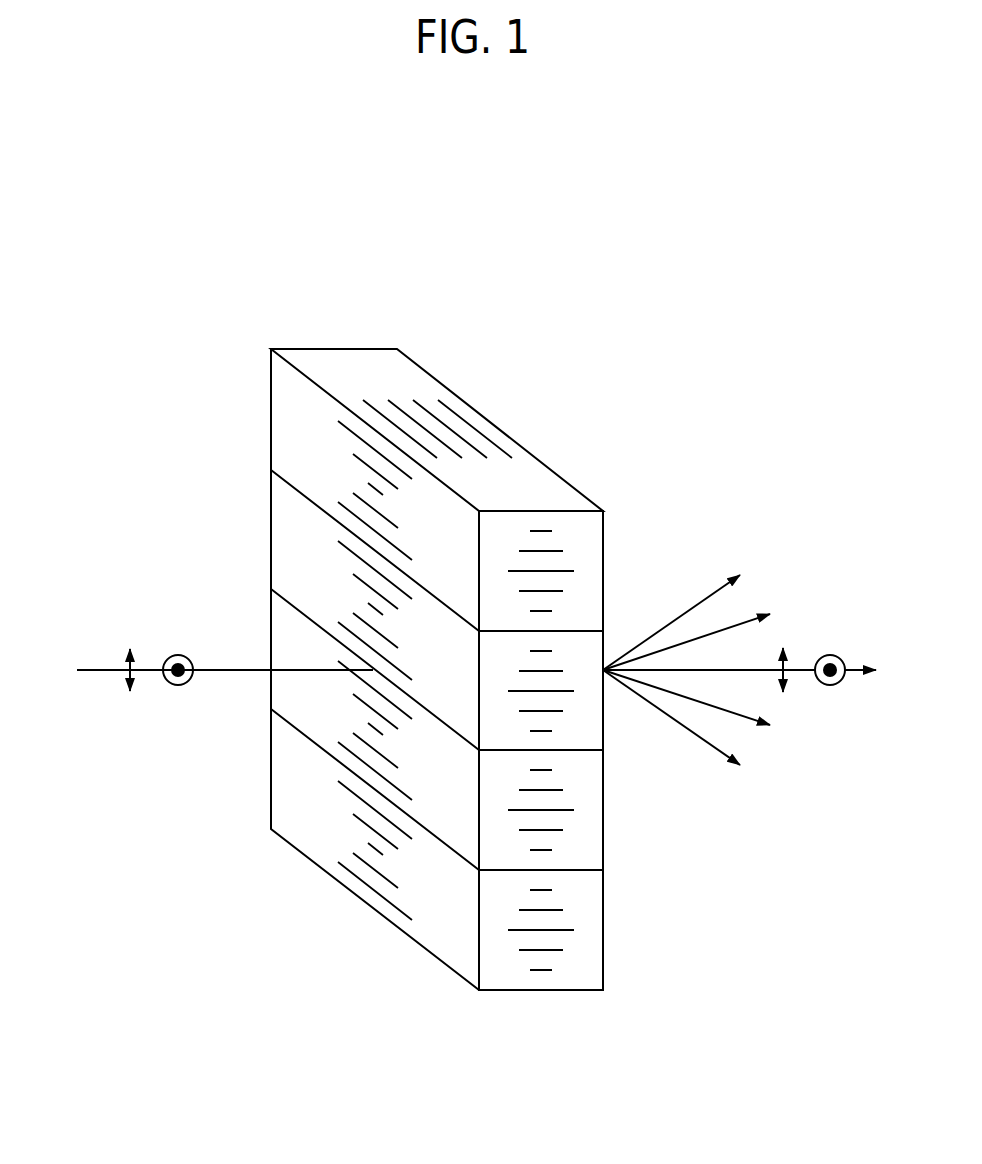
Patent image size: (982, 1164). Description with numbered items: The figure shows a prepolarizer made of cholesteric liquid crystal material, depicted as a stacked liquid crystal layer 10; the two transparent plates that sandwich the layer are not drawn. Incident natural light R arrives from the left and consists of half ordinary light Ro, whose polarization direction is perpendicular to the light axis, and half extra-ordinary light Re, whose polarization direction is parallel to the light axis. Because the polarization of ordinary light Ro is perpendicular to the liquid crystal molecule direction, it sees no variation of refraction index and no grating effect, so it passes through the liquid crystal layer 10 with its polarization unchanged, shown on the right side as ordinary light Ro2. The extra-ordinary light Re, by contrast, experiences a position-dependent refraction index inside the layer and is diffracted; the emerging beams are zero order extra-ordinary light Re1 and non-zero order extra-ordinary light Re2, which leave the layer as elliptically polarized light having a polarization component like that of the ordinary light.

The liquid crystal layer 10 is at (437, 649).
The incident natural light R is at (209, 669).
The ordinary light Ro is at (130, 653).
The extra-ordinary light Re is at (177, 650).
The zero order extra-ordinary light Re1 is at (763, 671).
The non-zero order extra-ordinary light Re2 is at (713, 669).
The ordinary light Ro2 is at (801, 659).